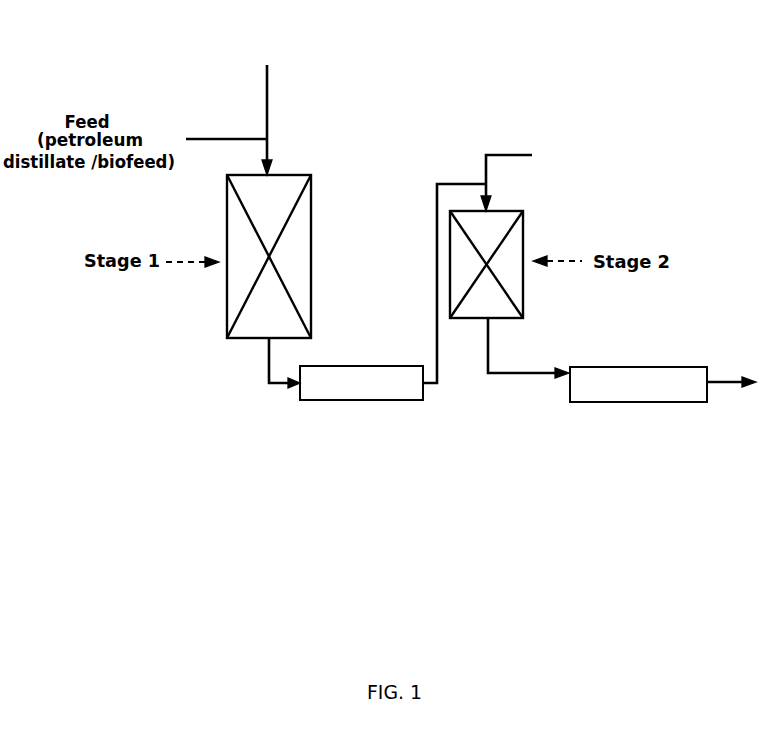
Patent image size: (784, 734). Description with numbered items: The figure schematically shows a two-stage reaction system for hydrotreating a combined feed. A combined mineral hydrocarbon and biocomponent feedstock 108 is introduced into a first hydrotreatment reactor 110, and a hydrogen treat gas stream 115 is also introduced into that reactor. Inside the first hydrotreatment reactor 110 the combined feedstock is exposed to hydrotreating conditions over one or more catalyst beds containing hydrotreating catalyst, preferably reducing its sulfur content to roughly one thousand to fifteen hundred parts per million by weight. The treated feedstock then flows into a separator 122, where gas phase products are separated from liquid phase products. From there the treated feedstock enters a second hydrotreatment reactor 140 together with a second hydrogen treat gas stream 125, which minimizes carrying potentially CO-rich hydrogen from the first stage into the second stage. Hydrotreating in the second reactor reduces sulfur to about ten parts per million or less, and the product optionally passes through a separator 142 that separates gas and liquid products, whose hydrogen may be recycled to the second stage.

The combined mineral hydrocarbon and biocomponent feedstock 108 is at (237, 129).
The hydrogen treat gas stream 115 is at (280, 100).
The first hydrotreatment reactor 110 is at (320, 191).
The separator 122 is at (365, 405).
The second hydrogen treat gas stream 125 is at (538, 148).
The second hydrotreatment reactor 140 is at (534, 240).
The separator 142 is at (655, 407).